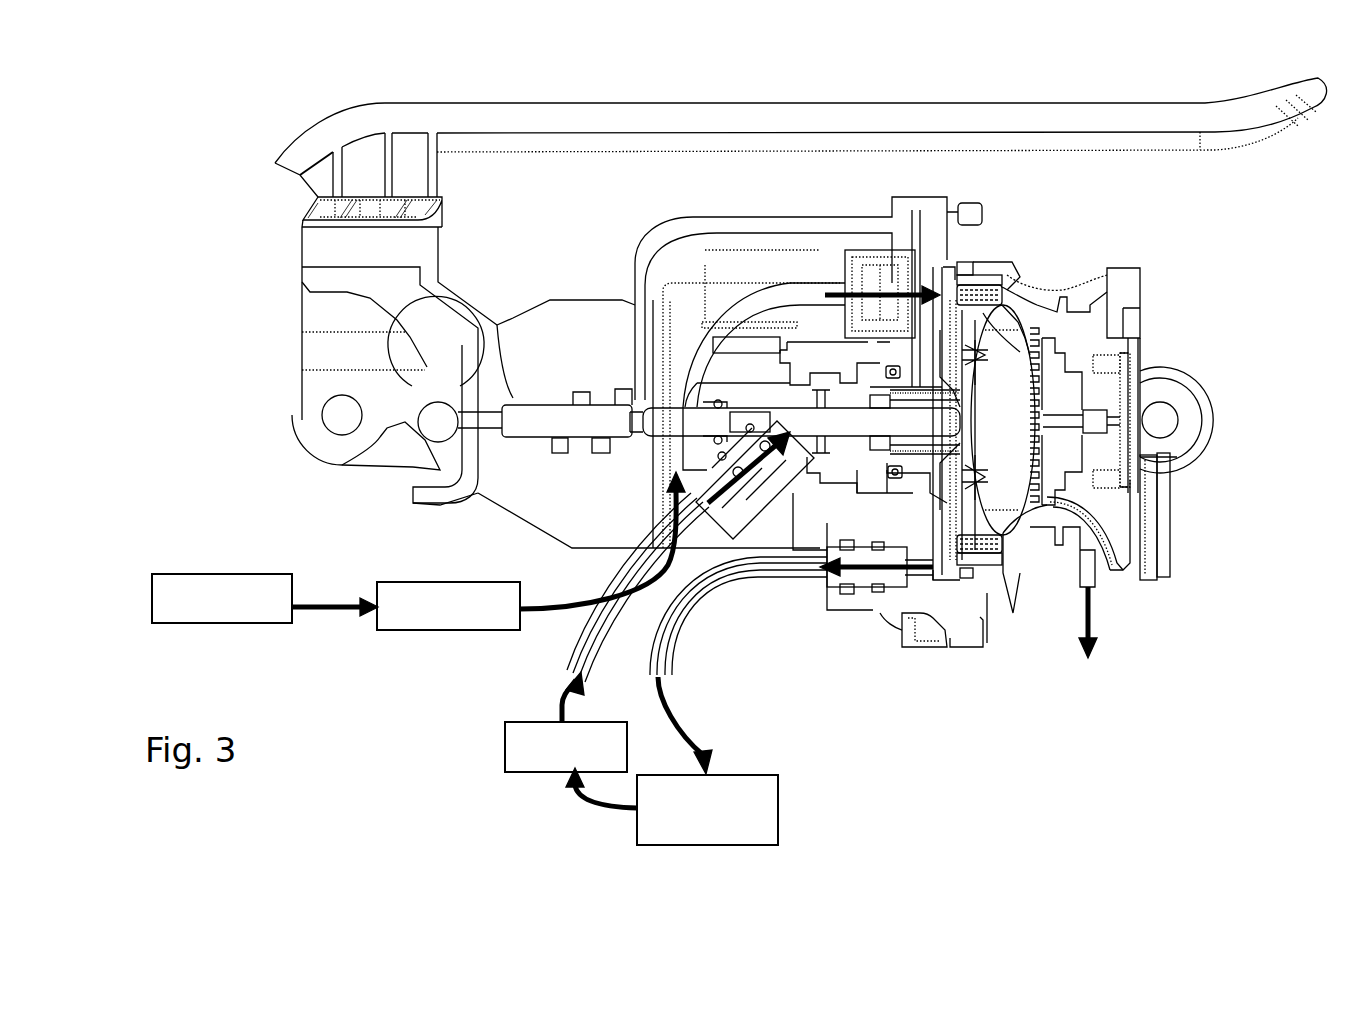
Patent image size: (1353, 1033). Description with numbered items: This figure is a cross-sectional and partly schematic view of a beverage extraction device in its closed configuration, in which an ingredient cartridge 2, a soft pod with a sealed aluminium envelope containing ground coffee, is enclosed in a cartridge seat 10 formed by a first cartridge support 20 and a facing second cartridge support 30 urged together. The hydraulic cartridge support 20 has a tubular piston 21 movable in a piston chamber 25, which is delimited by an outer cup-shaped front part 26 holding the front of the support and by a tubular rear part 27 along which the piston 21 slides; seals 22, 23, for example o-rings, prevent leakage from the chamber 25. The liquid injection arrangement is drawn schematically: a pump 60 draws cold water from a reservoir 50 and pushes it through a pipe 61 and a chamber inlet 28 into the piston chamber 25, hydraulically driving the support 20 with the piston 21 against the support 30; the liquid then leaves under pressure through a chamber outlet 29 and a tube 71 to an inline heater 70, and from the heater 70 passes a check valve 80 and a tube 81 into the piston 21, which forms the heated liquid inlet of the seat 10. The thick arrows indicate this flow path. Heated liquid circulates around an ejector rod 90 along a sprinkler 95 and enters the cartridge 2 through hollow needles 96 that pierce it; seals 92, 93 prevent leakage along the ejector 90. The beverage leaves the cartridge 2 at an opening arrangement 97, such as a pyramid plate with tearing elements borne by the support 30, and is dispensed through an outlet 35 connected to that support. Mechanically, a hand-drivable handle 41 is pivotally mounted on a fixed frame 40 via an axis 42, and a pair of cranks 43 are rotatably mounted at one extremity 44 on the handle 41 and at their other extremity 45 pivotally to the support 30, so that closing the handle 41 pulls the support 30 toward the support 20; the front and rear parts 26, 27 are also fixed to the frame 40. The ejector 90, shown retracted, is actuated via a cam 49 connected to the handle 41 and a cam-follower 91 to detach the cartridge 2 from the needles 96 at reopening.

The ingredient cartridge 2 is at (1002, 420).
The cartridge seat 10 is at (1033, 328).
The first cartridge support 20 is at (977, 277).
The tubular piston 21 is at (857, 355).
The seal 22 is at (893, 370).
The seal 23 is at (962, 265).
The piston chamber 25 is at (935, 317).
The front part 26 is at (950, 212).
The rear part 27 is at (870, 378).
The chamber inlet 28 is at (887, 285).
The chamber outlet 29 is at (915, 577).
The second cartridge support 30 is at (1127, 287).
The outlet 35 is at (1093, 580).
The fixed frame 40 is at (553, 300).
The handle 41 is at (516, 122).
The axis 42 is at (445, 413).
The cranks 43 is at (378, 457).
The extremity 44 is at (337, 418).
The extremity 45 is at (1163, 413).
The cam 49 is at (482, 462).
The reservoir 50 is at (265, 598).
The pump 60 is at (448, 606).
The pipe 61 is at (700, 347).
The inline heater 70 is at (672, 761).
The tube 71 is at (795, 565).
The check valve 80 is at (566, 722).
The tube 81 is at (577, 647).
The ejector rod 90 is at (784, 407).
The cam-follower 91 is at (557, 423).
The seal 92 is at (716, 434).
The seal 93 is at (888, 402).
The sprinkler 95 is at (970, 478).
The hollow needles 96 is at (970, 372).
The opening arrangement 97 is at (1052, 407).